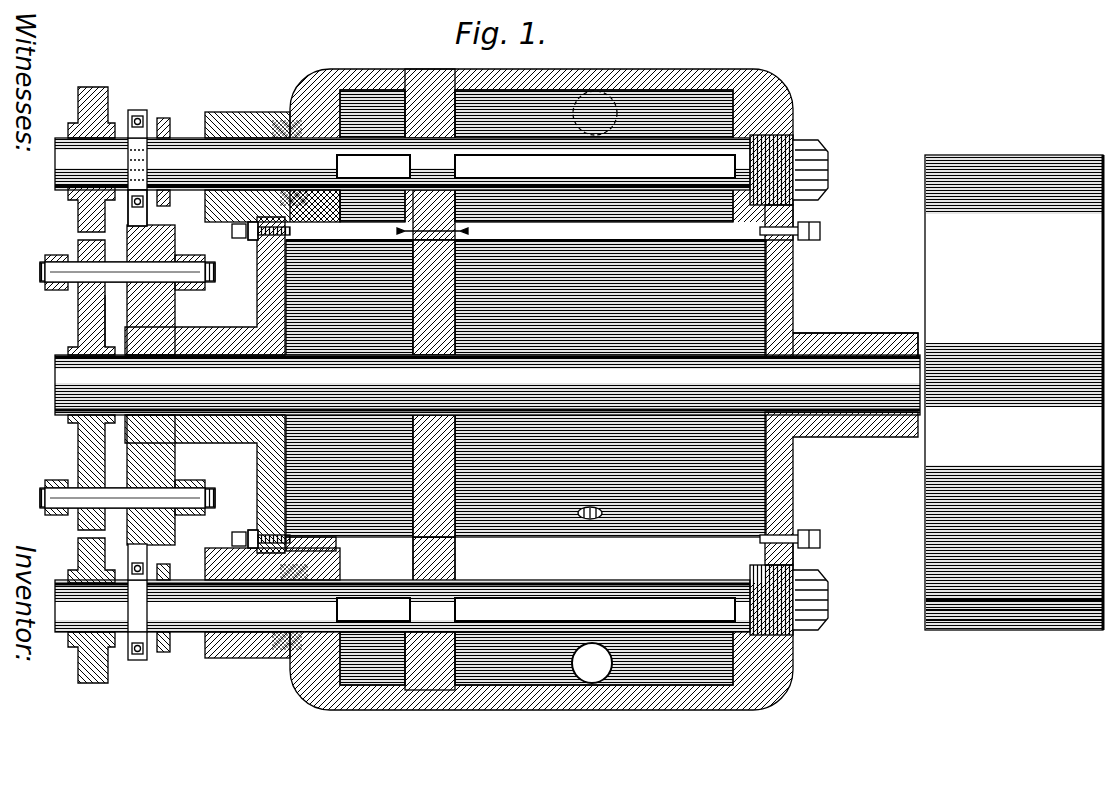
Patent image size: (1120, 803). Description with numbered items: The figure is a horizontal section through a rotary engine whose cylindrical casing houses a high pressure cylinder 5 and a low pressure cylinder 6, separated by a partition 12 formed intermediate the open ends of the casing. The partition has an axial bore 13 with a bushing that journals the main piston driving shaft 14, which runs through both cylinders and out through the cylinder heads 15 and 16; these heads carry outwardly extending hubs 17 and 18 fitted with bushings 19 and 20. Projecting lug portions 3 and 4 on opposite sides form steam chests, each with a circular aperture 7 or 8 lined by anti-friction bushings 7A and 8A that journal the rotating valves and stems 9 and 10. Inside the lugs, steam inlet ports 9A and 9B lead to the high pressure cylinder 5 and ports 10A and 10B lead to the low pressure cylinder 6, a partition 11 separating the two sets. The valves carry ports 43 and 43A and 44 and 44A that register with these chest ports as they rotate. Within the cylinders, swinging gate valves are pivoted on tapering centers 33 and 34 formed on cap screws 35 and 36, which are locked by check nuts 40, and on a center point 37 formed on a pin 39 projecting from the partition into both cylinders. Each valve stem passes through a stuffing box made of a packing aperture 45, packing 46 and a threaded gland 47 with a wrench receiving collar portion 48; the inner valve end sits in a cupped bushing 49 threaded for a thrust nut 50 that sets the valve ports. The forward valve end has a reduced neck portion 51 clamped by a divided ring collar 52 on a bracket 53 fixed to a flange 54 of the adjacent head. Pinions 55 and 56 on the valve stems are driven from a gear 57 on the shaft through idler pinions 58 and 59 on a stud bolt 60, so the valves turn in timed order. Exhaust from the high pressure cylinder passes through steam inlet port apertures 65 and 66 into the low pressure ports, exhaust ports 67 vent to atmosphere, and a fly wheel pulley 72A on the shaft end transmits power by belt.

The projecting lug portion 3 is at (683, 69).
The projecting lug portion 4 is at (642, 705).
The high pressure cylinder 5 is at (365, 520).
The low pressure cylinder 6 is at (662, 518).
The circular aperture 7 is at (428, 69).
The anti-friction bushing 7A is at (432, 190).
The circular aperture 8 is at (425, 690).
The anti-friction bushing 8A is at (432, 583).
The rotating valve and stem 9 is at (402, 164).
The steam inlet port 9A is at (340, 78).
The steam inlet port 9B is at (350, 695).
The rotating valve and stem 10 is at (402, 606).
The steam inlet port 10A is at (570, 78).
The steam inlet port 10B is at (545, 695).
The partition 11 is at (382, 80).
The partition 12 is at (460, 355).
The axial bore 13 is at (425, 415).
The main piston driving shaft 14 is at (55, 374).
The cylinder head 15 is at (257, 298).
The cylinder head 16 is at (793, 276).
The outwardly extending hub 17 is at (232, 452).
The outwardly extending hub 18 is at (835, 440).
The bushing 19 is at (192, 290).
The bushing 20 is at (850, 340).
The tapering center 33 is at (385, 560).
The tapering center 34 is at (311, 539).
The cap screw 35 is at (232, 236).
The cap screw 36 is at (232, 534).
The center point 37 is at (420, 239).
The pin 39 is at (457, 560).
The check nut 40 is at (252, 240).
The steam inlet port 43 is at (373, 166).
The steam inlet port 43A is at (595, 166).
The steam inlet port 44 is at (373, 609).
The steam inlet port 44A is at (595, 609).
The packing aperture 45 is at (258, 116).
The packing 46 is at (285, 115).
The gland 47 is at (186, 118).
The wrench receiving collar portion 48 is at (147, 112).
The cupped bushing 49 is at (775, 133).
The thrust nut 50 is at (828, 163).
The reduced neck portion 51 is at (148, 158).
The divided ring collar 52 is at (78, 214).
The bracket 53 is at (150, 206).
The flange 54 is at (80, 324).
The pinion 55 is at (92, 87).
The pinion 56 is at (85, 683).
The gear 57 is at (78, 440).
The idler pinion 58 is at (78, 302).
The idler pinion 59 is at (78, 464).
The stud bolt 60 is at (45, 264).
The steam inlet port aperture 65 is at (618, 115).
The steam inlet port aperture 66 is at (612, 664).
The exhaust port 67 is at (588, 520).
The fly wheel pulley 72A is at (1014, 392).